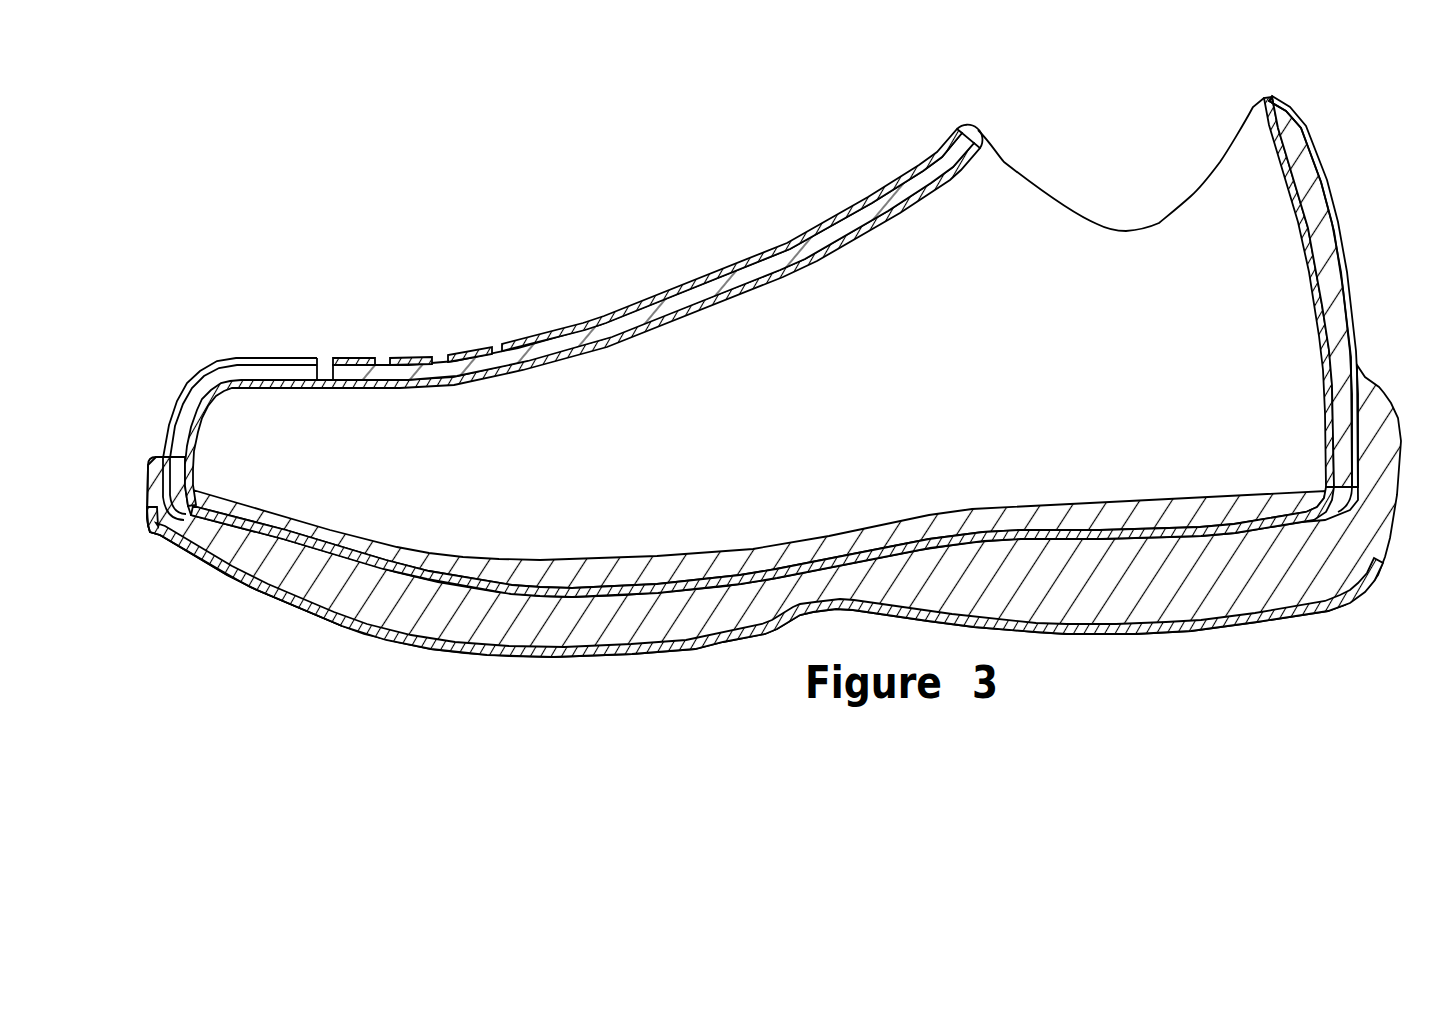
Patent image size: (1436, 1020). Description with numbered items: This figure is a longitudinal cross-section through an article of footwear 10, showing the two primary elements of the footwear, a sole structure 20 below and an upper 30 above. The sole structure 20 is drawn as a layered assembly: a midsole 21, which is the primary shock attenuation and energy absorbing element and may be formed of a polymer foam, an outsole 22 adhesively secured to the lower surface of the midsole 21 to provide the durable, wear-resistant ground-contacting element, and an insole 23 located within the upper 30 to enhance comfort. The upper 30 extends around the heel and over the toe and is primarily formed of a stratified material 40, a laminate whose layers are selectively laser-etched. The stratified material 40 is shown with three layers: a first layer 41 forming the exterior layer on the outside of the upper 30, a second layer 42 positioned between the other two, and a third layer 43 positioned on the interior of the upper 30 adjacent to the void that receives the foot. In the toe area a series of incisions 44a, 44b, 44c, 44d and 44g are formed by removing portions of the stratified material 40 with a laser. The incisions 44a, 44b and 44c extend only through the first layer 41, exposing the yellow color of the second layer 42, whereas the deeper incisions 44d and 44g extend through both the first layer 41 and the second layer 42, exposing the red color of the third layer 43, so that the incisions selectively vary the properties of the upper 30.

The article of footwear 10 is at (646, 180).
The sole structure 20 is at (578, 661).
The midsole 21 is at (450, 627).
The outsole 22 is at (310, 613).
The insole 23 is at (697, 555).
The upper 30 is at (653, 300).
The stratified material 40 is at (826, 222).
The first layer 41 is at (787, 304).
The second layer 42 is at (913, 185).
The third layer 43 is at (877, 228).
The incision 44a is at (500, 350).
The incision 44b is at (442, 353).
The incision 44c is at (383, 357).
The incision 44d is at (325, 368).
The incision 44g is at (243, 372).